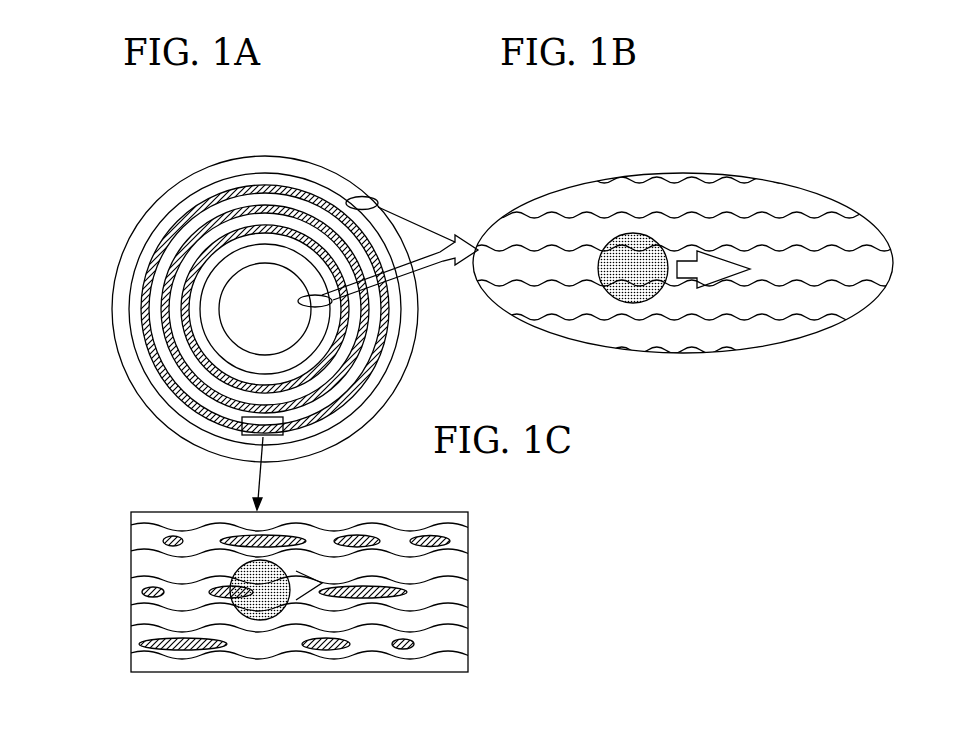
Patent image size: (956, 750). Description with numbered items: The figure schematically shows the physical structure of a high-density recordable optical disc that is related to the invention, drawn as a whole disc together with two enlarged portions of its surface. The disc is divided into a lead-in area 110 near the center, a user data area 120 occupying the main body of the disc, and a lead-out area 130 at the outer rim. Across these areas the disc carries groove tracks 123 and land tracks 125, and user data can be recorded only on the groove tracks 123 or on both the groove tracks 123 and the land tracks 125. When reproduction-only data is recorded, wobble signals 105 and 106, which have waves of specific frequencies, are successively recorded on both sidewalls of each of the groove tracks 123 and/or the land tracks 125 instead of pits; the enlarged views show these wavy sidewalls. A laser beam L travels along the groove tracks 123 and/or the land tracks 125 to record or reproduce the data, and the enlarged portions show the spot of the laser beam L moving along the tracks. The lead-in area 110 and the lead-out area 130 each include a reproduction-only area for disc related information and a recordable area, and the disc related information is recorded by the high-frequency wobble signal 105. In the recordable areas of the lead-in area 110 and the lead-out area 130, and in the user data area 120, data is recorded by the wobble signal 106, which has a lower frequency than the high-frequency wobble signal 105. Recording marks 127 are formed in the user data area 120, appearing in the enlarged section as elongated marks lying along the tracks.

In FIG. 1B, the high-frequency wobble signal 105 is at (700, 212).
In FIG. 1C, the wobble signal 106 is at (403, 522).
In FIG. 1A, the lead-in area 110 is at (268, 248).
In FIG. 1A, the user data area 120 is at (128, 293).
In FIG. 1C, the groove tracks 123 is at (140, 545).
In FIG. 1C, the land tracks 125 is at (140, 572).
In FIG. 1C, the recording marks 127 is at (398, 648).
In FIG. 1A, the lead-out area 130 is at (223, 172).
In FIG. 1B, the laser beam L is at (623, 235).
In FIG. 1C, the laser beam L is at (260, 620).